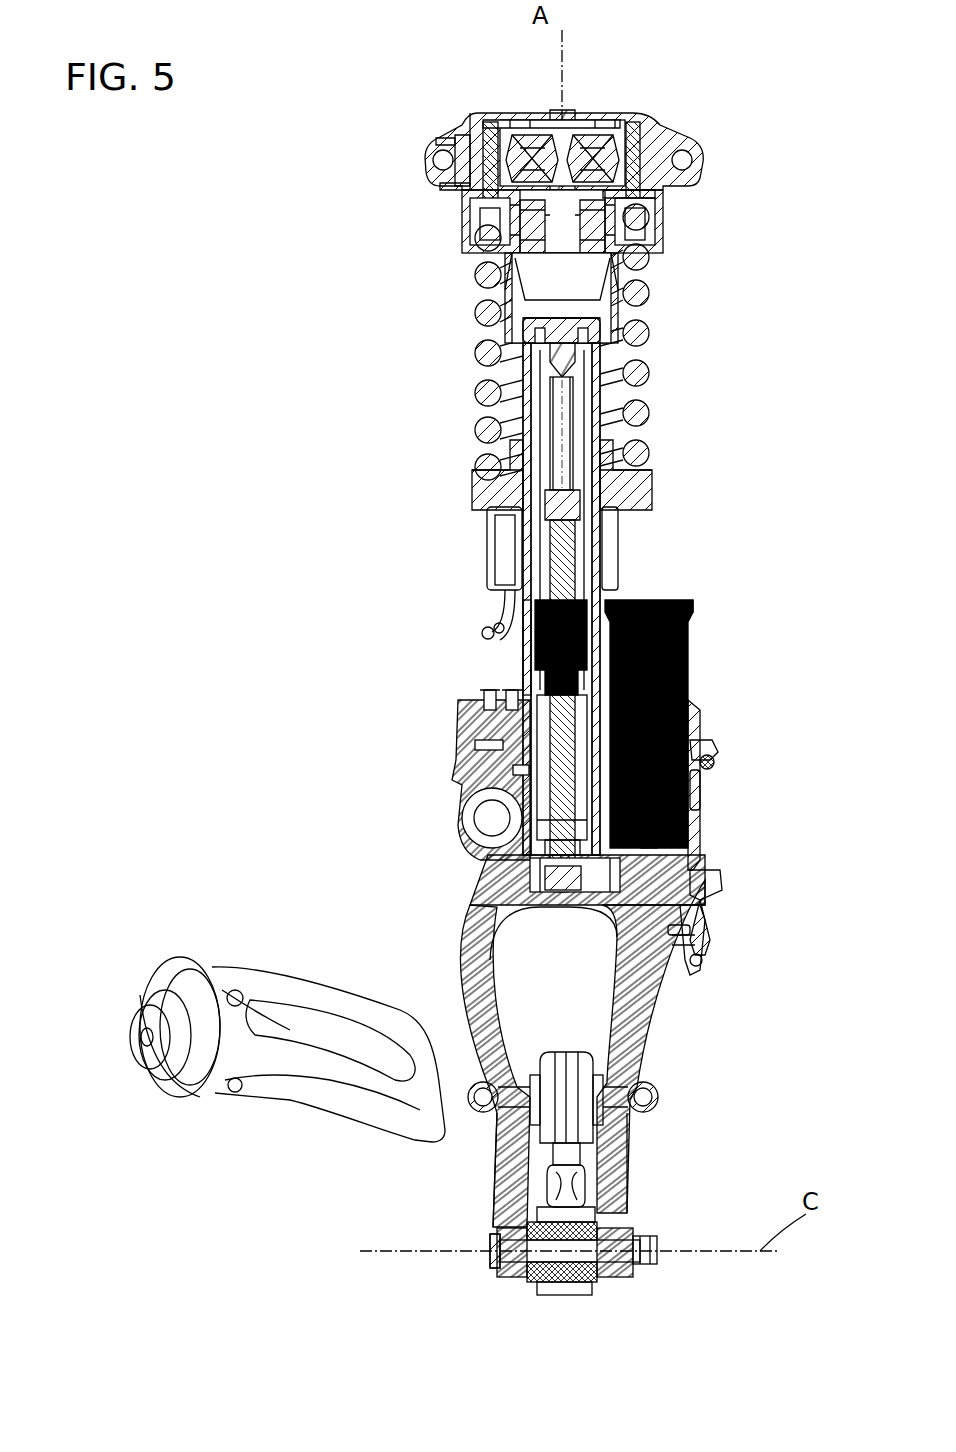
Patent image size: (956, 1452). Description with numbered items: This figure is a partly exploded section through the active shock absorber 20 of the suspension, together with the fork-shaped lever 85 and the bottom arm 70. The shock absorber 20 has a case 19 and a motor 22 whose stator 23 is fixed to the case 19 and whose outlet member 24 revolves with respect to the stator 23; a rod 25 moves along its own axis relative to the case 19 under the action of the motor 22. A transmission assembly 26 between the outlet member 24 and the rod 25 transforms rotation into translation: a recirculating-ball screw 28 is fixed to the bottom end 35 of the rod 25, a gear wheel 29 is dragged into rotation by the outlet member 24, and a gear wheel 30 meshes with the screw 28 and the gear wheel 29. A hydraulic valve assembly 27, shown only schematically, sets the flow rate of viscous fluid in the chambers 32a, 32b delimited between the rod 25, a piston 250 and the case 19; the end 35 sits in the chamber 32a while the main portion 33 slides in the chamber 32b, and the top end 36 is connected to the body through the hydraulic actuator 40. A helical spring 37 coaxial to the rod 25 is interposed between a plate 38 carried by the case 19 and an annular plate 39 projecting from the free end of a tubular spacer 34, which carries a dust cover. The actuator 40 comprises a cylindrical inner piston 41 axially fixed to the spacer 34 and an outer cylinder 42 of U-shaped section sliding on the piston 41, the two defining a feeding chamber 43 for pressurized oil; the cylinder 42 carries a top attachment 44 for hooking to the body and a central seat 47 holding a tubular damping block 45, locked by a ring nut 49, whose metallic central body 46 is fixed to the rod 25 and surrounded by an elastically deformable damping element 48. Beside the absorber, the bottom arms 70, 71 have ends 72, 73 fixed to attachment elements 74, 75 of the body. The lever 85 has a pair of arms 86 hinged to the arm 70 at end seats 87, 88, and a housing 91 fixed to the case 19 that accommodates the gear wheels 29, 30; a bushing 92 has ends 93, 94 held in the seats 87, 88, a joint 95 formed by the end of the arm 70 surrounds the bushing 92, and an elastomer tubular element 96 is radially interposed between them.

The case 19 is at (628, 538).
The active shock absorber 20 is at (762, 545).
The motor 22 is at (688, 640).
The stator 23 is at (690, 712).
The outlet member 24 is at (693, 615).
The rod 25 is at (648, 320).
The transmission assembly 26 is at (695, 805).
The hydraulic valve assembly 27 is at (450, 792).
The recirculating-ball screw 28 is at (690, 688).
The gear wheel 29 is at (700, 918).
The gear wheel 30 is at (590, 905).
The chamber 32a is at (540, 712).
The chamber 32b is at (536, 400).
The main portion 33 is at (512, 482).
The tubular spacer 34 is at (672, 210).
The end 35 is at (640, 600).
The end 36 is at (566, 110).
The spring 37 is at (655, 262).
The plate 38 is at (655, 478).
The plate 39 is at (662, 235).
The hydraulic actuator 40 is at (680, 122).
The inner piston 41 is at (644, 120).
The outer cylinder 42 is at (712, 128).
The feeding chamber 43 is at (484, 126).
The top attachment 44 is at (478, 180).
The damping block 45 is at (518, 154).
The central body 46 is at (660, 193).
The central seat 47 is at (490, 126).
The damping element 48 is at (598, 128).
The locking ring nut 49 is at (478, 113).
The bottom arm 70 is at (580, 1092).
The bottom arm 71 is at (212, 948).
The end 72 is at (556, 1060).
The end 73 is at (190, 1097).
The attachment element 74 is at (468, 1098).
The attachment element 75 is at (135, 1042).
The lever 85 is at (690, 1110).
The arms 86 is at (497, 1125).
The end seat 87 is at (512, 1280).
The end seat 88 is at (610, 1278).
The housing 91 is at (706, 895).
The bushing 92 is at (496, 1270).
The end 93 is at (524, 1251).
The end 94 is at (642, 1236).
The joint 95 is at (555, 1290).
The tubular element 96 is at (575, 1285).
The piston 250 is at (495, 628).